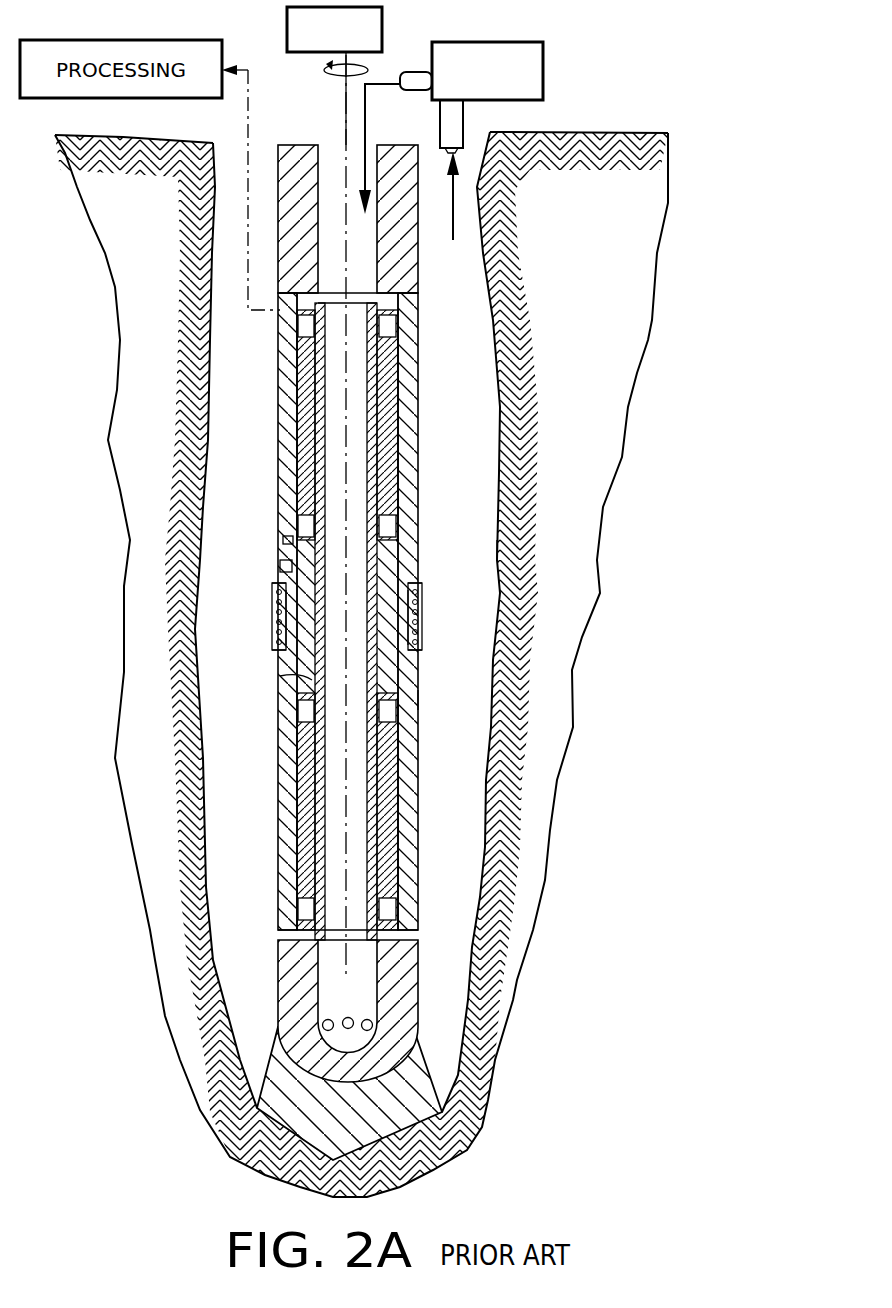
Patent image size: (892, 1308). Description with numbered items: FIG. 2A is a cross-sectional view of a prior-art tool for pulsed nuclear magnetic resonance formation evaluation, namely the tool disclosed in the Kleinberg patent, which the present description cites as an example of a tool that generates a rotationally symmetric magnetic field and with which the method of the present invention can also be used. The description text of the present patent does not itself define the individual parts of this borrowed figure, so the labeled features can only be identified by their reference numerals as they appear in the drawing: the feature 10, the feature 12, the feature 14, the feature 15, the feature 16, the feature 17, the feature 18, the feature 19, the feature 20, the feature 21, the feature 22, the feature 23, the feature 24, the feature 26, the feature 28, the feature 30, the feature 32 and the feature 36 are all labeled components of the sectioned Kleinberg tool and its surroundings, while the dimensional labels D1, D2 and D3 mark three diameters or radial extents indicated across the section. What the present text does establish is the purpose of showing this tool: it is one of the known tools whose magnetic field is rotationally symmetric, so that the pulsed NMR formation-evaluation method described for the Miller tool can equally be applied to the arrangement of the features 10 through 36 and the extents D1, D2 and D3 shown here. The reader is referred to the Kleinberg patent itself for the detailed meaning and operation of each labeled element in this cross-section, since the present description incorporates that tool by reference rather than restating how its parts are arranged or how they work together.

The earth formation 10 is at (590, 388).
The borehole 12 is at (268, 1062).
The drill string / collar 14 is at (418, 280).
The drive 15 is at (287, 22).
The formation region near borehole wall 16 is at (488, 543).
The inner tube wall 17 is at (418, 510).
The annulus between tool and borehole wall 18 is at (492, 695).
The pump 19 is at (543, 74).
The drill pipe 20 is at (336, 142).
The longitudinal axis / bore 21 is at (335, 433).
The permanent magnets 22 is at (300, 482).
The drilling fluid nozzles 23 is at (372, 1020).
The magnet section 24 is at (282, 678).
The RF antenna coil 26 is at (272, 616).
The antenna shield 28 is at (276, 650).
The sensor 30 is at (284, 538).
The electronics module 32 is at (281, 566).
The antenna end caps 36 is at (272, 592).
The outer tool diameter D1 is at (297, 785).
The sensitive region diameter D2 is at (278, 822).
The inner diameter D3 is at (315, 855).